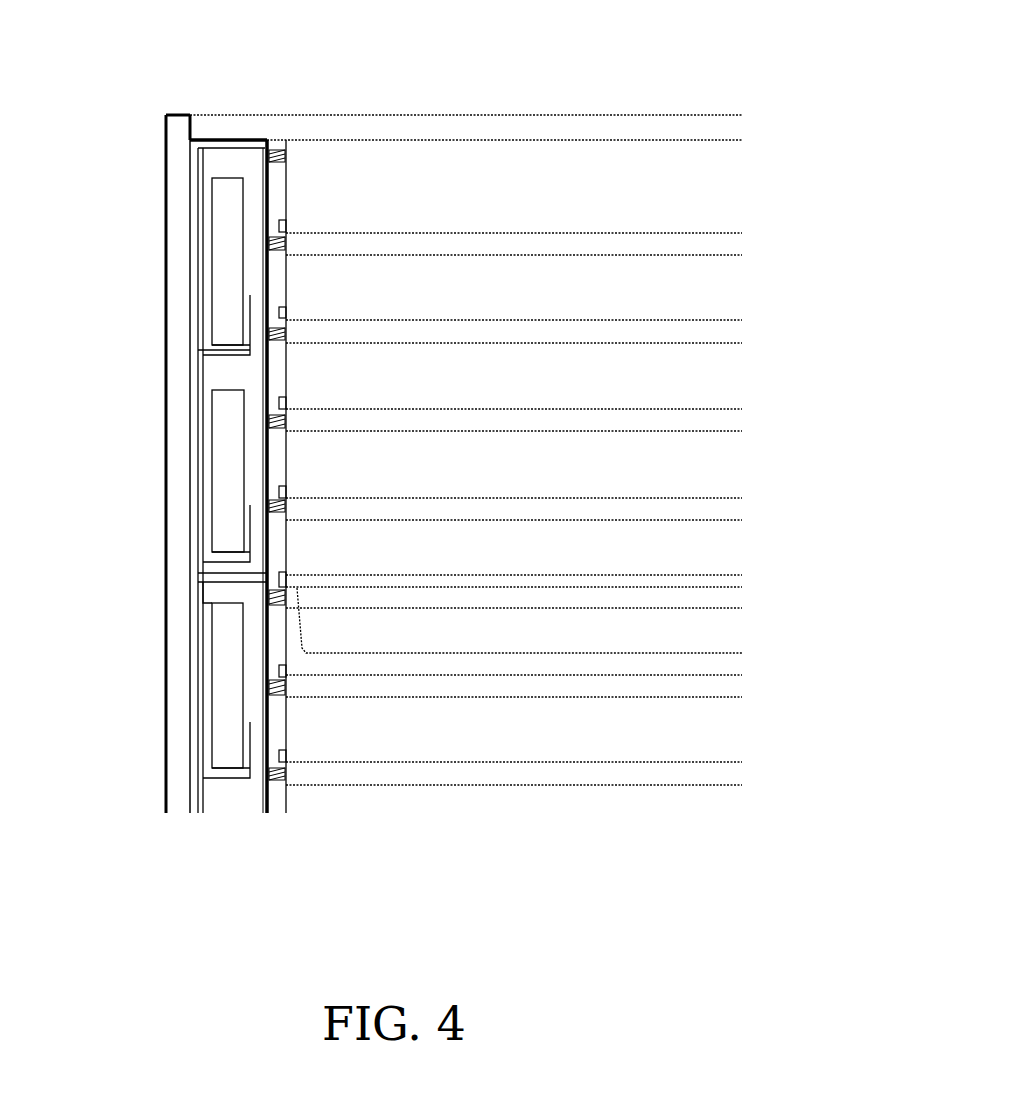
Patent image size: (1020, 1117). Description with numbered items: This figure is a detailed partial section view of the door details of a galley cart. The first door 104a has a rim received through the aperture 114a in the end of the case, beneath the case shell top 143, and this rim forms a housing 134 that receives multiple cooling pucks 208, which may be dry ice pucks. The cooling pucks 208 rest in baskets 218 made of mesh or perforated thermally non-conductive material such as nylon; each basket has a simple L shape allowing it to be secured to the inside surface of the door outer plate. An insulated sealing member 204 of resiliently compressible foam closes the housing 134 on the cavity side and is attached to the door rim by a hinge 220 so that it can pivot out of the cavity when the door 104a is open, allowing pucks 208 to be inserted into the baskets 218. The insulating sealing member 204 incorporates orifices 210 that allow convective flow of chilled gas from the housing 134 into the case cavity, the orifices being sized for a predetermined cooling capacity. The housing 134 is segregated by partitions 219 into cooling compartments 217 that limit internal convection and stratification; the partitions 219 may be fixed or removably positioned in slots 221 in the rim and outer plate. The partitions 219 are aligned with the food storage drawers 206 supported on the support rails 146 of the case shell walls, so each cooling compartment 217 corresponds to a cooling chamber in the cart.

The first door 104a is at (167, 272).
The aperture 114a is at (222, 138).
The hinge 220 is at (270, 140).
The insulated sealing member 204 is at (273, 188).
The case shell top 143 is at (435, 128).
The support rails 146 is at (558, 335).
The food storage drawers 206 is at (623, 628).
The cooling pucks 208 is at (230, 242).
The baskets 218 is at (232, 378).
The housing 134 is at (207, 571).
The slots 221 is at (205, 578).
The partitions 219 is at (233, 578).
The cooling compartments 217 is at (270, 350).
The orifices 210 is at (288, 410).